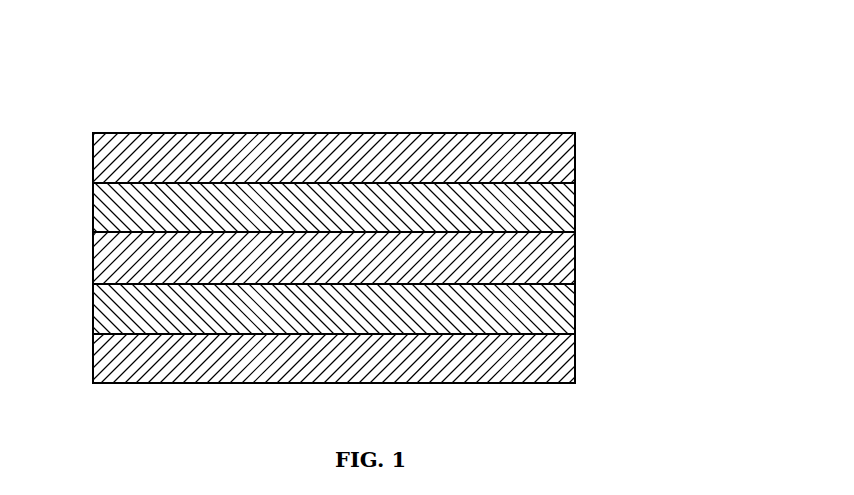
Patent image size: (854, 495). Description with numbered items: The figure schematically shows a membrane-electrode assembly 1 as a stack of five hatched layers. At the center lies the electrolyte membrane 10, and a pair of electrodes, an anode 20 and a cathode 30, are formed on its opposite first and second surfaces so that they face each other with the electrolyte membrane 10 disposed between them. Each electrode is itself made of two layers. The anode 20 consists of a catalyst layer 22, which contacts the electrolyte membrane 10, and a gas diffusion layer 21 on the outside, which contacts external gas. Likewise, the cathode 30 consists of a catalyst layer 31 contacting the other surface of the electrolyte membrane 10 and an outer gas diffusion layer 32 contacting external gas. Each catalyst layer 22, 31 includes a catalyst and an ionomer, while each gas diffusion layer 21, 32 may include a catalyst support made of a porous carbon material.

The membrane-electrode assembly 1 is at (118, 115).
The electrolyte membrane 10 is at (576, 257).
The anode 20 is at (89, 134).
The gas diffusion layer 21 is at (576, 153).
The catalyst layer 22 is at (576, 205).
The cathode 30 is at (89, 285).
The catalyst layer 31 is at (576, 308).
The gas diffusion layer 32 is at (576, 353).